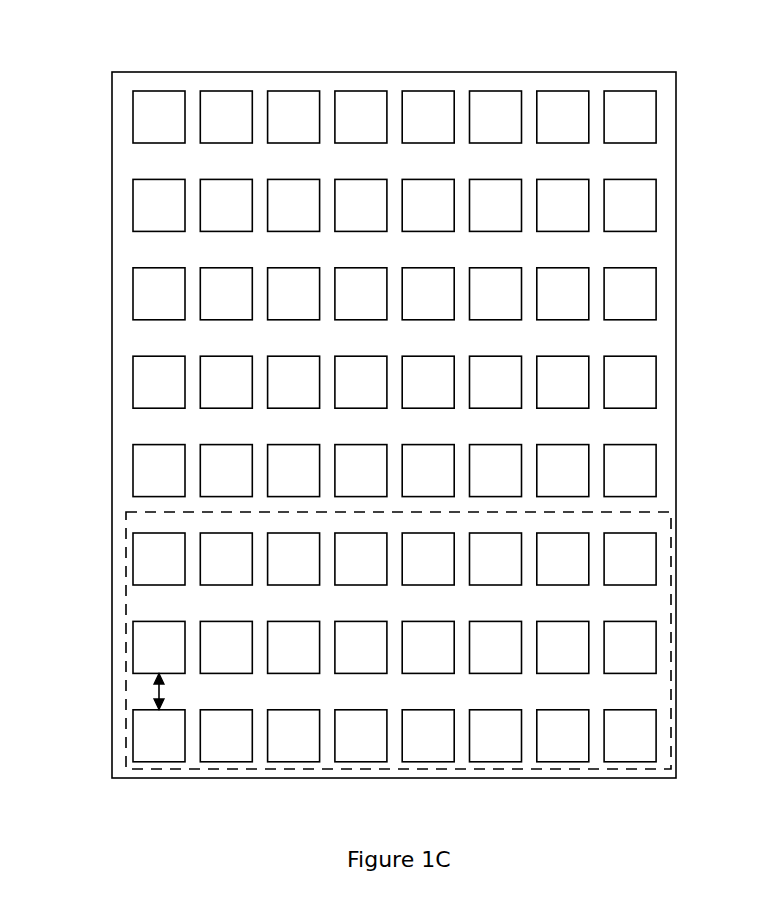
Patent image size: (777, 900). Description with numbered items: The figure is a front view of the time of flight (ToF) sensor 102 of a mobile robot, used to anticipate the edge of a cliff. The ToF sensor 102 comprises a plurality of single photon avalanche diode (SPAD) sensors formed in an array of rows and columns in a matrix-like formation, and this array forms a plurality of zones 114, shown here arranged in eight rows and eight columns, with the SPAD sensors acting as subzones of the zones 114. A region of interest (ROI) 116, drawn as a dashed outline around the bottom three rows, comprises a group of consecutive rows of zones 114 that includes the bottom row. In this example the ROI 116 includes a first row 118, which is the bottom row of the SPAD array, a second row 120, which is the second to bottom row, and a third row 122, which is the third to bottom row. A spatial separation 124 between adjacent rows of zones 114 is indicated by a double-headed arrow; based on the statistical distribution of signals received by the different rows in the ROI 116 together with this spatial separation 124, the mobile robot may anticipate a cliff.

The time of flight (ToF) sensor 102 is at (111, 128).
The zone 114 is at (227, 91).
The region of interest (ROI) 116 is at (126, 588).
The first row 118 is at (657, 737).
The second row 120 is at (657, 644).
The third row 122 is at (657, 559).
The spatial separation 124 is at (159, 690).